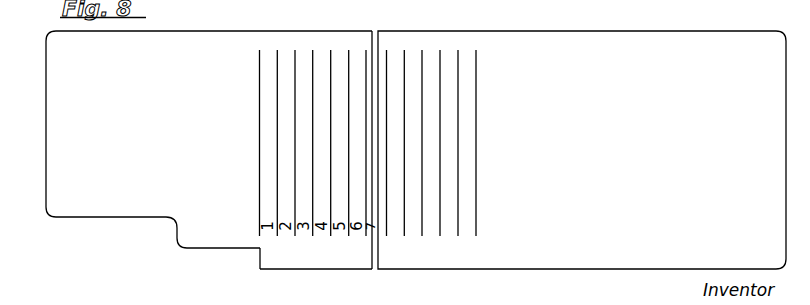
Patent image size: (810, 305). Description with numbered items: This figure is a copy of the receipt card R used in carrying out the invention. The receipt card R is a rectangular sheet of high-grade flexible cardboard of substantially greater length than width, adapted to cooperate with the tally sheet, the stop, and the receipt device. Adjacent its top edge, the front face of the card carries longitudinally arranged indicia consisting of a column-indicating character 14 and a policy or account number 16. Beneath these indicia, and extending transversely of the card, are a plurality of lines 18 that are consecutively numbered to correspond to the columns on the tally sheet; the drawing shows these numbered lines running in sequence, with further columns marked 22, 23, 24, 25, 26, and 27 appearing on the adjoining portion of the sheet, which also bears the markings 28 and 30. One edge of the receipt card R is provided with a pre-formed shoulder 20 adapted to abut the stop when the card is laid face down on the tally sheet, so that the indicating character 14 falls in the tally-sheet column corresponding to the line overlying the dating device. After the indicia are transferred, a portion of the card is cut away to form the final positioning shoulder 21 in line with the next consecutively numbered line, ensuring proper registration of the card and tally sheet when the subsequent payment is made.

The column-indicating character 14 is at (69, 184).
The policy or account number 16 is at (128, 199).
The lines 18 is at (278, 50).
The pre-formed shoulder 20 is at (257, 264).
The final positioning shoulder 21 is at (175, 236).
The column 22 is at (382, 224).
The column 23 is at (395, 223).
The column 24 is at (413, 223).
The column 25 is at (431, 223).
The column 26 is at (449, 223).
The column 27 is at (467, 223).
The second card 28 is at (582, 134).
The right column lines 30 is at (435, 118).
The receipt card R is at (352, 270).